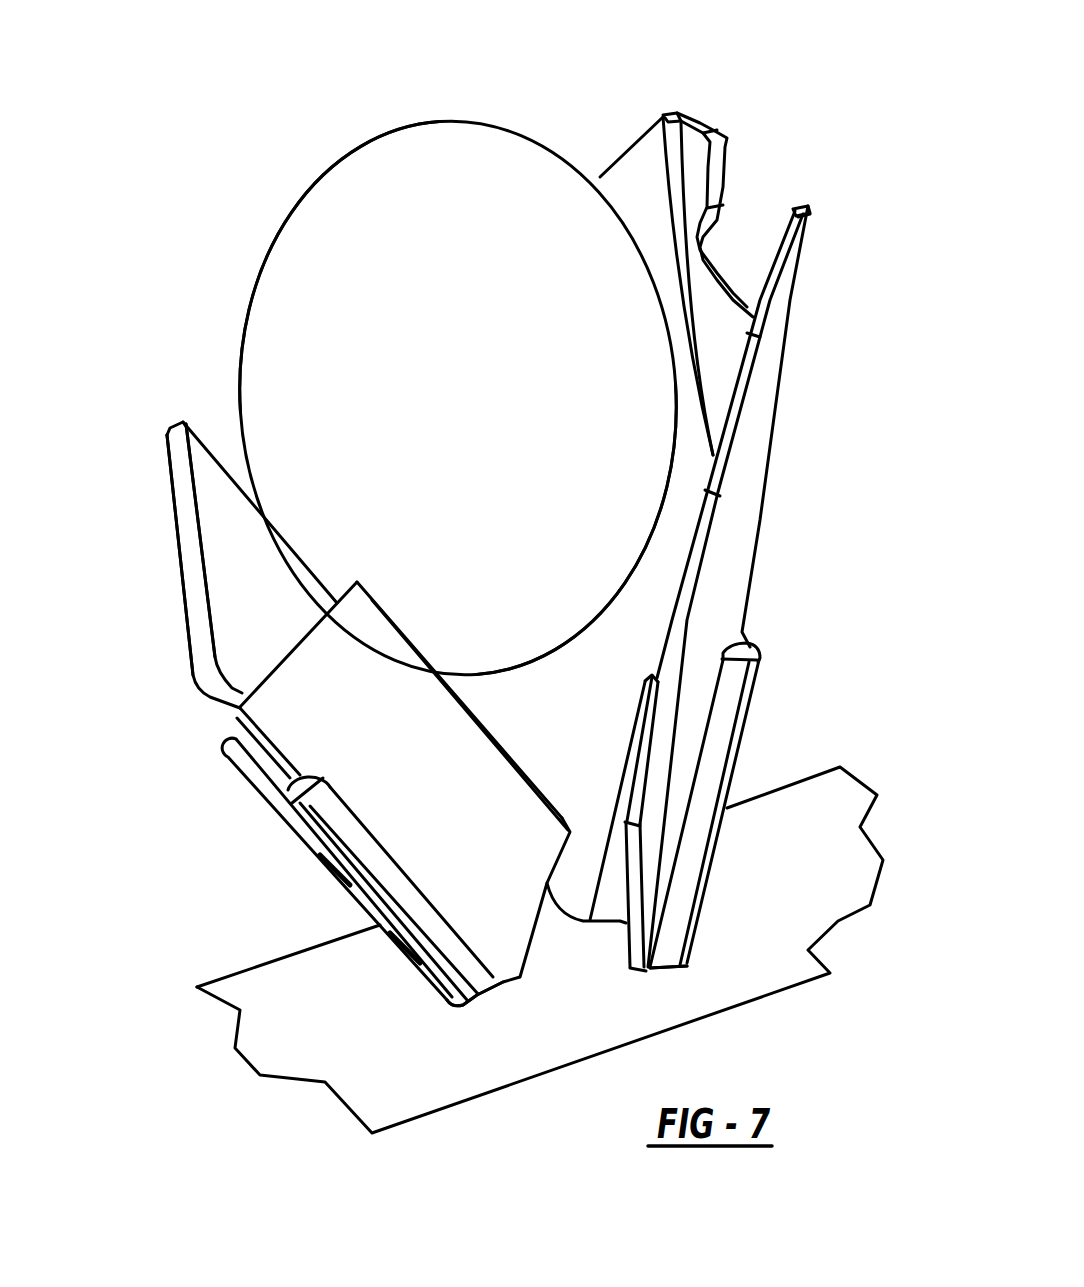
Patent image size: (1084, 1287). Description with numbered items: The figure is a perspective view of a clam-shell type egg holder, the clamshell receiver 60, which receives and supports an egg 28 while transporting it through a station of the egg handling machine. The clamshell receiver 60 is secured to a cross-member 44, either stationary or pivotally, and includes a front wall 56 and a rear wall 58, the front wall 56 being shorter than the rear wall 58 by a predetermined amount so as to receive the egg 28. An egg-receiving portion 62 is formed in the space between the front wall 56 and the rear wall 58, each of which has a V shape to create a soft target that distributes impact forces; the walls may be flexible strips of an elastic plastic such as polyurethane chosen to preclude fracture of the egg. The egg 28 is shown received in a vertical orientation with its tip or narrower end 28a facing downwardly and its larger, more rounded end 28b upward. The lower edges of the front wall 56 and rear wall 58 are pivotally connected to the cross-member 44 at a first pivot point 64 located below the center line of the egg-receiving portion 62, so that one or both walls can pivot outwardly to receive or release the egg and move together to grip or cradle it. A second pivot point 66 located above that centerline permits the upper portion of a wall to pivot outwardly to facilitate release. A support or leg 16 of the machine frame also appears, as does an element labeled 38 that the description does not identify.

The legs 16 is at (290, 822).
The egg 28 is at (436, 121).
The tip of the egg 28a is at (522, 651).
The rounded end of the egg 28b is at (340, 268).
The bent blade arm 38 is at (620, 102).
The cross-member 44 is at (817, 897).
The front wall 56 is at (177, 515).
The rear wall 58 is at (770, 476).
The clamshell receiver 60 is at (789, 587).
The egg-receiving portion 62 is at (637, 607).
The first pivot point 64 is at (650, 970).
The second pivot point 66 is at (740, 751).